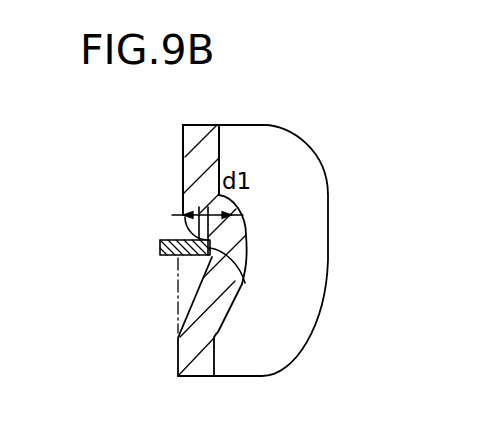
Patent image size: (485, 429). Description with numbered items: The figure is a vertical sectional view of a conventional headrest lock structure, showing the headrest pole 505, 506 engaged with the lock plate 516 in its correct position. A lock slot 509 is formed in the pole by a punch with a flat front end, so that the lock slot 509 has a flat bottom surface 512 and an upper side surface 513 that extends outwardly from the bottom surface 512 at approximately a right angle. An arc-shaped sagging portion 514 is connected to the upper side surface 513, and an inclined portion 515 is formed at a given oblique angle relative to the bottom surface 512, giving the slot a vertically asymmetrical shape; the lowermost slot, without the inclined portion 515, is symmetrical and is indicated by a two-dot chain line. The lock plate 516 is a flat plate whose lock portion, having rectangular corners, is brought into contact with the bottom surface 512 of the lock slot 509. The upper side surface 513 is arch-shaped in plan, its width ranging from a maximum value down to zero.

The headrest pole 505 is at (183, 157).
The headrest pole 506 is at (201, 170).
The lock slot 509 is at (197, 257).
The bottom surface 512 is at (245, 283).
The upper side surface 513 is at (243, 222).
The arc-shaped portion 514 is at (192, 222).
The inclined portion 515 is at (178, 312).
The lock plate 516 is at (160, 246).